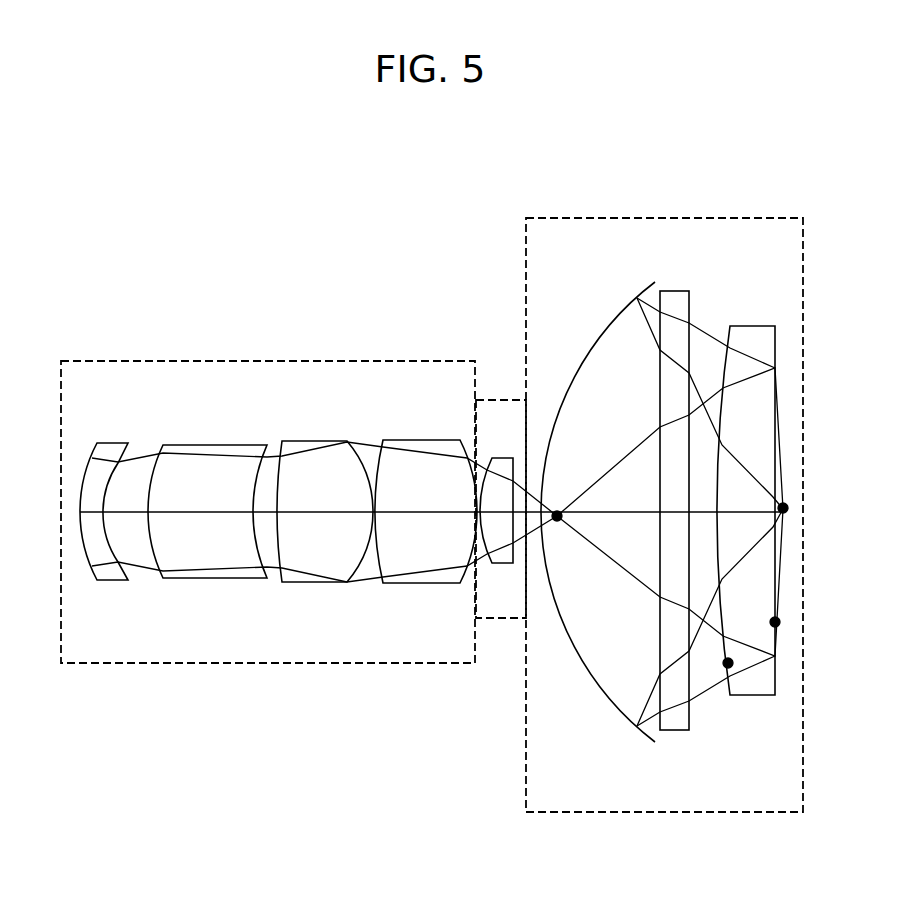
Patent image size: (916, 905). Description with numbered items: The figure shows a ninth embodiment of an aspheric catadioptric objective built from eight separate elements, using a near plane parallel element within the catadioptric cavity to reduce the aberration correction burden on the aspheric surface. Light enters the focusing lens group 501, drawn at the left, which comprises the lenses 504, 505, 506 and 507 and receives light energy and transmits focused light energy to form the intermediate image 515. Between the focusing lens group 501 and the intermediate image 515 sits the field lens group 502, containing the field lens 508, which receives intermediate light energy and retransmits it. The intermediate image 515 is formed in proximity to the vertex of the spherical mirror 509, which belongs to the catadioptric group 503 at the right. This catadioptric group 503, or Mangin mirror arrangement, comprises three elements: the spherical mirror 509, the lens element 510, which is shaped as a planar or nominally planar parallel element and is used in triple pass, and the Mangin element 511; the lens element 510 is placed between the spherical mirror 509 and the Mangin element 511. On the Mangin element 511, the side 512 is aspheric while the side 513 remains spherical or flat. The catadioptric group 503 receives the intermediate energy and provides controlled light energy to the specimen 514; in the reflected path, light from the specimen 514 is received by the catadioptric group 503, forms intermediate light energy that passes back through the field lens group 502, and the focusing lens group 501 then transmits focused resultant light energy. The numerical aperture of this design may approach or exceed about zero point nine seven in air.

The focusing lens group 501 is at (268, 489).
The field lens group 502 is at (497, 399).
The catadioptric group 503 is at (664, 491).
The lens 504 is at (104, 488).
The lens 505 is at (207, 487).
The lens 506 is at (325, 489).
The lens 507 is at (426, 490).
The field lens 508 is at (498, 492).
The spherical mirror 509 is at (598, 512).
The lens element 510 is at (680, 491).
The Mangin element 511 is at (747, 493).
The side of Mangin element 512 is at (728, 663).
The side of Mangin element 513 is at (775, 622).
The specimen 514 is at (783, 508).
The intermediate image 515 is at (557, 516).